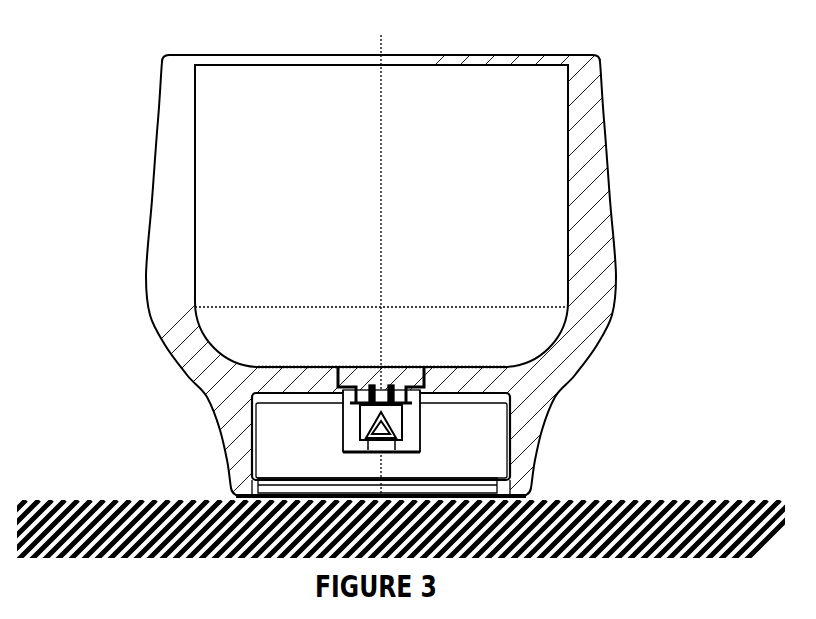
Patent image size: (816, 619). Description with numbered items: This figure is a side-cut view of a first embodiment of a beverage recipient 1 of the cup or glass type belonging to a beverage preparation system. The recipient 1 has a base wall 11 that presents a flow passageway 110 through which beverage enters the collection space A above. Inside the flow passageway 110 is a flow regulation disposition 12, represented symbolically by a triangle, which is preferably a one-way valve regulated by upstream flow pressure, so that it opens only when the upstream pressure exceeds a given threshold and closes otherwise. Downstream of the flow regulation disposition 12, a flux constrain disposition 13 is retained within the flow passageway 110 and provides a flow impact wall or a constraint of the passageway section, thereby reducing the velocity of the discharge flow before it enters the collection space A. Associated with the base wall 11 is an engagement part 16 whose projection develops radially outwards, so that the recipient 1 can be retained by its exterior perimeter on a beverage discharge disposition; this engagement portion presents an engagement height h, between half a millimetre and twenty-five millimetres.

The beverage recipient 1 is at (408, 300).
The collection space A is at (341, 223).
The base wall 11 is at (291, 364).
The flow passageway 110 is at (381, 444).
The flux constrain disposition 13 is at (382, 396).
The flow regulation disposition 12 is at (372, 431).
The engagement height h is at (502, 437).
The engagement part 16 is at (414, 481).